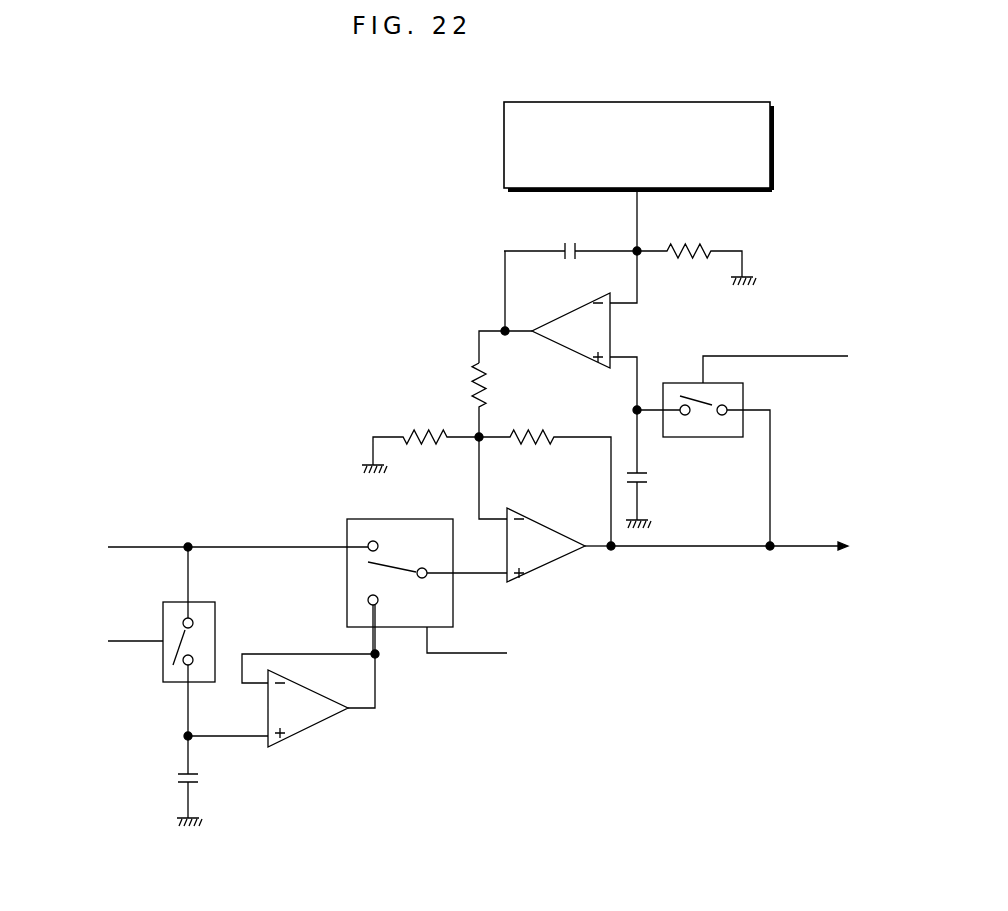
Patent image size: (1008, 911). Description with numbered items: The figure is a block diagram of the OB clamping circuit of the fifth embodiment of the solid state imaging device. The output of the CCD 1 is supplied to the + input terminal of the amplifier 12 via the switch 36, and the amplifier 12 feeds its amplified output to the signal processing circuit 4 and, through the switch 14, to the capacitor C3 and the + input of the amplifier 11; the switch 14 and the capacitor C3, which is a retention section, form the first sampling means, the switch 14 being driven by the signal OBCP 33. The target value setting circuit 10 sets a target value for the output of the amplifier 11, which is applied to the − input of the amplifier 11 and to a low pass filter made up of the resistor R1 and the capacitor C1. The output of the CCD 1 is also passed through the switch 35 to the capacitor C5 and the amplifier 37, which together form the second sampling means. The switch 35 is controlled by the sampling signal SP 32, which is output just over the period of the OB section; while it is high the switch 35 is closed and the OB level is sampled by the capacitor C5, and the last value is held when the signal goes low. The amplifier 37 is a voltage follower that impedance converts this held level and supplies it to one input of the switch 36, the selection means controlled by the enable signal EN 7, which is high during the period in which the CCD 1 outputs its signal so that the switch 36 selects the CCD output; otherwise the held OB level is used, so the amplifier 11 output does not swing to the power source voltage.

The target value setting circuit 10 is at (504, 110).
The capacitor C1 is at (570, 235).
The resistor R1 is at (696, 248).
The amplifier 11 is at (556, 346).
The signal OBCP 33 is at (775, 356).
The switch 14 is at (728, 440).
The capacitor C3 is at (659, 469).
The amplifier 12 is at (548, 563).
The signal processing circuit 4 is at (730, 582).
The switch 36 is at (347, 528).
The CCD 1 is at (238, 534).
The signal EN 7 is at (494, 646).
The switch 35 is at (217, 617).
The sampling signal SP 32 is at (135, 667).
The capacitor C5 is at (208, 781).
The amplifier 37 is at (305, 730).